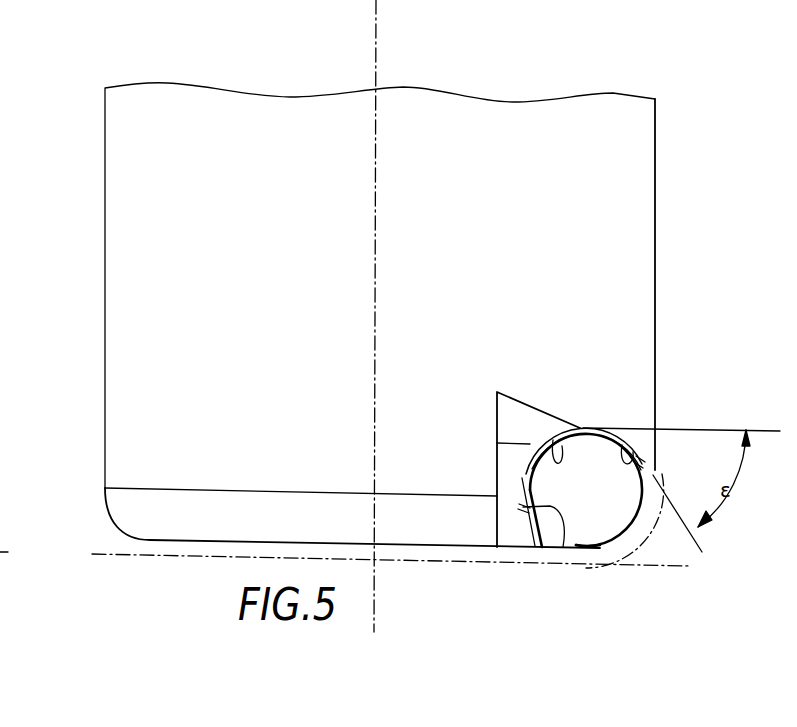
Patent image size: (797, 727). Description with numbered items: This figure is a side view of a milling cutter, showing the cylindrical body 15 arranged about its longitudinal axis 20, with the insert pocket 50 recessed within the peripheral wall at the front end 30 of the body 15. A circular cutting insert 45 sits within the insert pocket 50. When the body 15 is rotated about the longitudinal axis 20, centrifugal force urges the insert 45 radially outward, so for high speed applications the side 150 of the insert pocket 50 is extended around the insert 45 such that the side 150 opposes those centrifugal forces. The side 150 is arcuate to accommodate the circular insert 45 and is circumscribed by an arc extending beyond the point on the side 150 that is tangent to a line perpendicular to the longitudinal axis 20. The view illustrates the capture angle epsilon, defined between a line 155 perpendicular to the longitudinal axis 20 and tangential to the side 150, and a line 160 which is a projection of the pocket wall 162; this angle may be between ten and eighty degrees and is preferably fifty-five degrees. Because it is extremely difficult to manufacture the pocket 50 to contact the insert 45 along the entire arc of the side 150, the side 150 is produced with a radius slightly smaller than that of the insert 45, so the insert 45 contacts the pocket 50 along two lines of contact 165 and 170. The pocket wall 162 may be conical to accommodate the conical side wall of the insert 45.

The cylindrical body 15 is at (105, 197).
The longitudinal axis 20 is at (376, 50).
The front end 30 is at (465, 547).
The cutting insert 45 is at (590, 548).
The insert pocket 50 is at (587, 453).
The side of the insert pocket 150 is at (522, 470).
The line perpendicular to the longitudinal axis 155 is at (760, 430).
The projection line of the pocket wall 160 is at (694, 540).
The pocket wall 162 is at (547, 432).
The line of contact 165 is at (560, 535).
The line of contact 170 is at (633, 460).